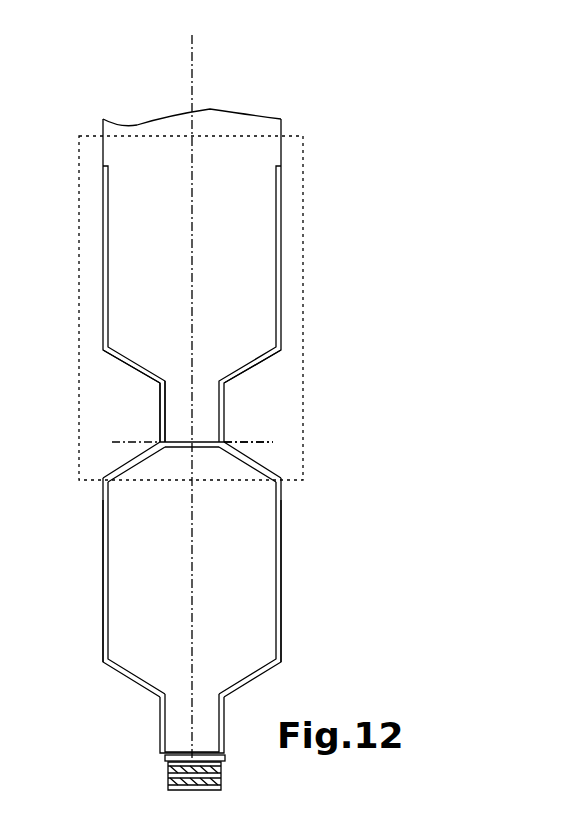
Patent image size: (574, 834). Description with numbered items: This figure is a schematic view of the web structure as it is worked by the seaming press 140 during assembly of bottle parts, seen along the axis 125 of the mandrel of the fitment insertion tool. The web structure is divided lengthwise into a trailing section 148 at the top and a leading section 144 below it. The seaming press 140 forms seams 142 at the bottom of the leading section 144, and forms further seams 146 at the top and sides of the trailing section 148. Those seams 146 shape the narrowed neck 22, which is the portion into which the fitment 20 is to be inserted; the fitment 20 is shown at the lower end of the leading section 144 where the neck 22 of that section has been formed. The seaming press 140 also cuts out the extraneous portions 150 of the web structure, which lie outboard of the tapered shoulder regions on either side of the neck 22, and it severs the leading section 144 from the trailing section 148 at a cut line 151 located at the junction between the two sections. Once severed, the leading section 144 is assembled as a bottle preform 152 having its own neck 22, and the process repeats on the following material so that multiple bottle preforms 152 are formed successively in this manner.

The fitment 20 is at (177, 778).
The neck 22 is at (178, 423).
The axis 125 is at (192, 70).
The seaming press 140 is at (78, 313).
The seams 142 is at (123, 465).
The leading section 144 is at (142, 577).
The seams 146 is at (160, 407).
The trailing section 148 is at (142, 252).
The extraneous portions 150 is at (123, 393).
The cut line 151 is at (257, 442).
The bottle preform 152 is at (283, 607).